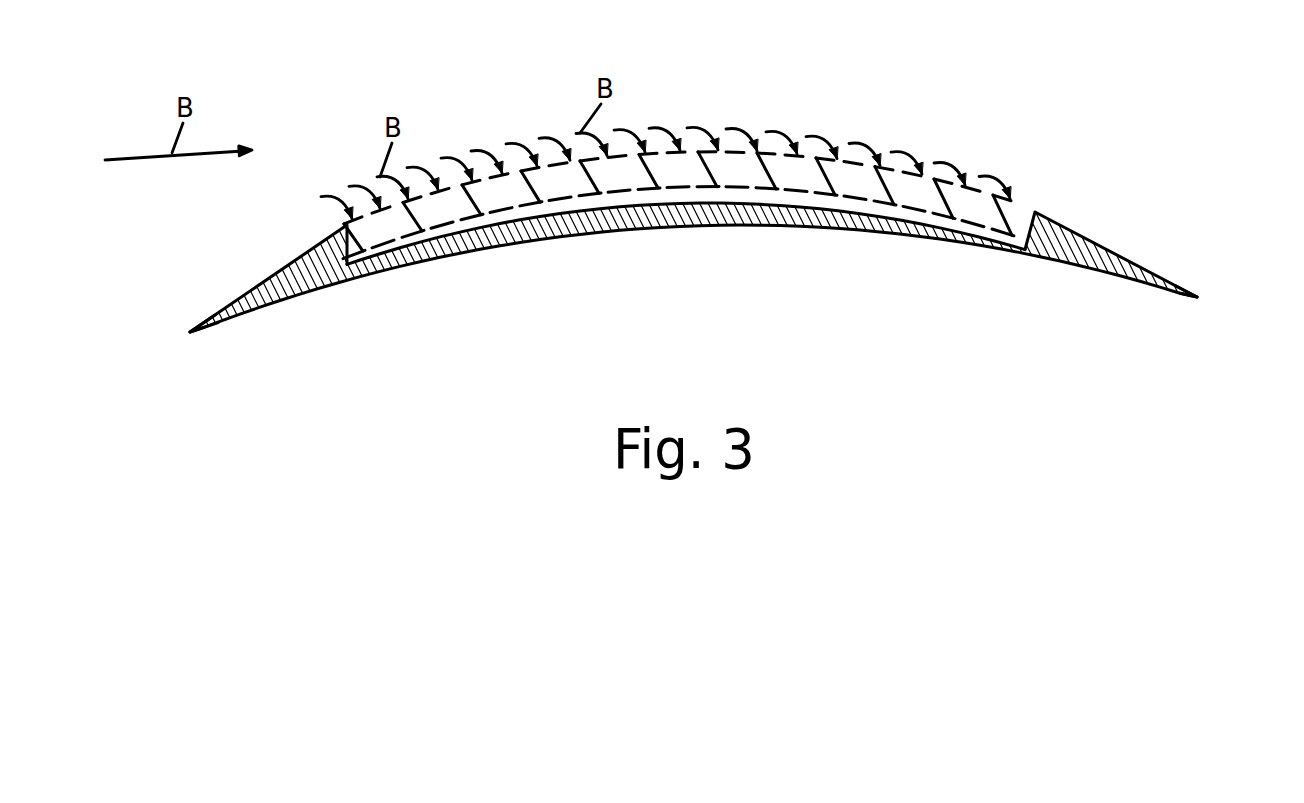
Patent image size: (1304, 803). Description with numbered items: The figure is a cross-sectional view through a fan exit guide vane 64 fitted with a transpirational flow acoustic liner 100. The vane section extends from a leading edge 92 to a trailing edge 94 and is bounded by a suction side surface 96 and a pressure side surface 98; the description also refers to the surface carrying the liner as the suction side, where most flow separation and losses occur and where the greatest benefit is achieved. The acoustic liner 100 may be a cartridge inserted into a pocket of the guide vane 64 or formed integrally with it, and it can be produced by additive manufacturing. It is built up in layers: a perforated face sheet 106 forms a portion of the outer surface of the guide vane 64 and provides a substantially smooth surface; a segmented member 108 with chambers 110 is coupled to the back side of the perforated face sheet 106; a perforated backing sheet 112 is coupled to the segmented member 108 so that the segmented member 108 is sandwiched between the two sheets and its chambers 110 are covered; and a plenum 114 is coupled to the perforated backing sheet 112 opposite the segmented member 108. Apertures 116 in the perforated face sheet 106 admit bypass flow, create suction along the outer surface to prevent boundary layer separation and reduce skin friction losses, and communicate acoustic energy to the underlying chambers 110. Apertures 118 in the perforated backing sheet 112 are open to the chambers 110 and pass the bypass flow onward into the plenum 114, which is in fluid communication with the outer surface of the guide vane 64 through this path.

The acoustic liner 100 is at (817, 96).
The leading edge 92 is at (190, 331).
The trailing edge 94 is at (1198, 297).
The suction side surface 96 is at (318, 292).
The pressure side surface 98 is at (312, 250).
The segmented member 108 is at (1005, 223).
The fan exit guide vane 64 is at (644, 212).
The perforated face sheet 106 is at (488, 176).
The chambers 110 is at (497, 191).
The perforated backing sheet 112 is at (557, 203).
The plenum 114 is at (707, 192).
The apertures 116 is at (992, 200).
The apertures 118 is at (985, 222).